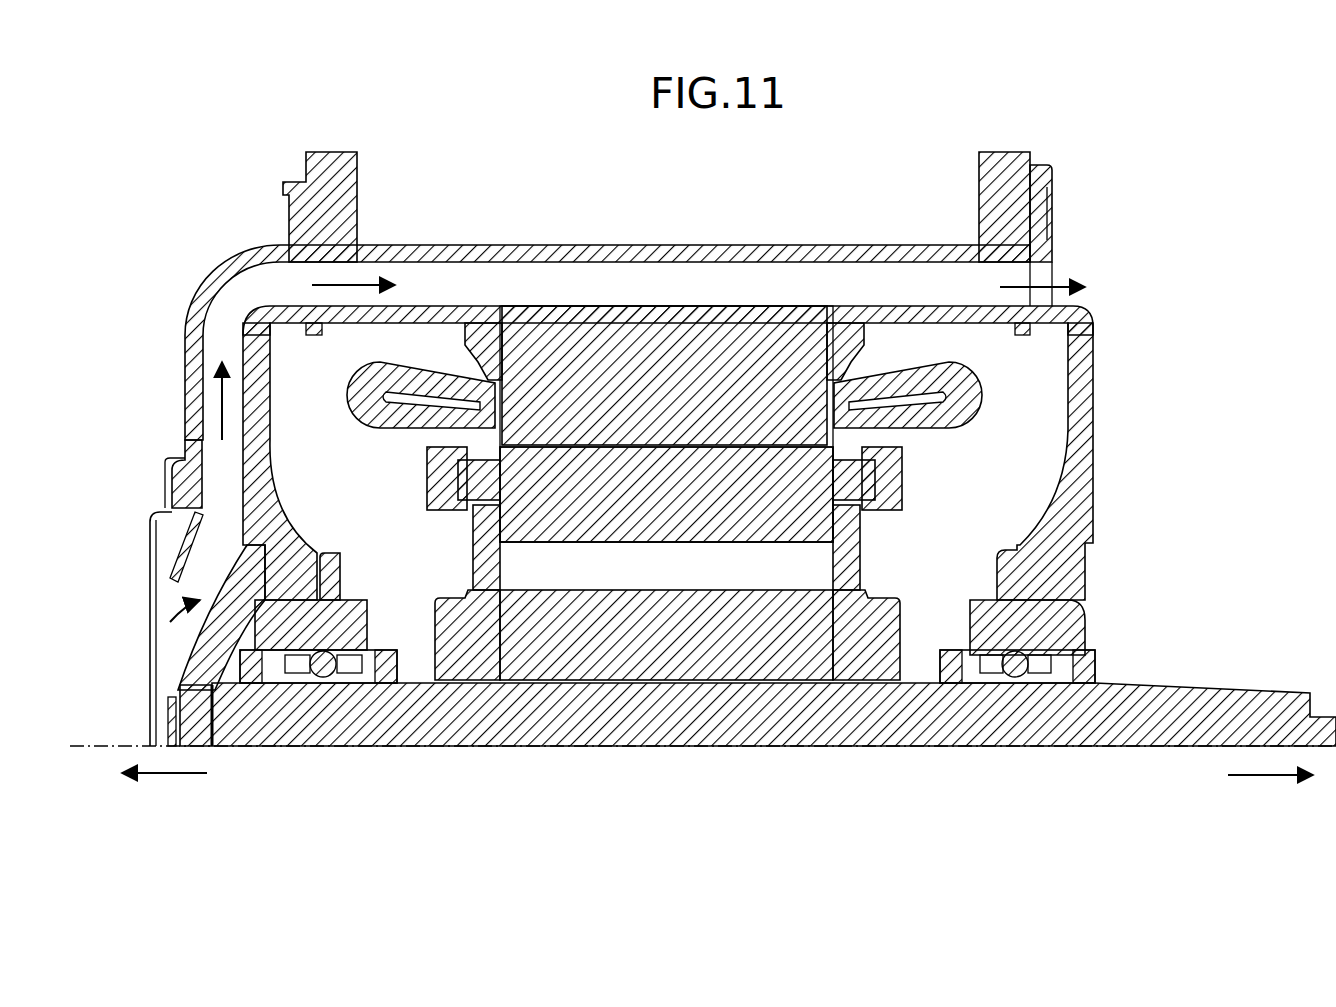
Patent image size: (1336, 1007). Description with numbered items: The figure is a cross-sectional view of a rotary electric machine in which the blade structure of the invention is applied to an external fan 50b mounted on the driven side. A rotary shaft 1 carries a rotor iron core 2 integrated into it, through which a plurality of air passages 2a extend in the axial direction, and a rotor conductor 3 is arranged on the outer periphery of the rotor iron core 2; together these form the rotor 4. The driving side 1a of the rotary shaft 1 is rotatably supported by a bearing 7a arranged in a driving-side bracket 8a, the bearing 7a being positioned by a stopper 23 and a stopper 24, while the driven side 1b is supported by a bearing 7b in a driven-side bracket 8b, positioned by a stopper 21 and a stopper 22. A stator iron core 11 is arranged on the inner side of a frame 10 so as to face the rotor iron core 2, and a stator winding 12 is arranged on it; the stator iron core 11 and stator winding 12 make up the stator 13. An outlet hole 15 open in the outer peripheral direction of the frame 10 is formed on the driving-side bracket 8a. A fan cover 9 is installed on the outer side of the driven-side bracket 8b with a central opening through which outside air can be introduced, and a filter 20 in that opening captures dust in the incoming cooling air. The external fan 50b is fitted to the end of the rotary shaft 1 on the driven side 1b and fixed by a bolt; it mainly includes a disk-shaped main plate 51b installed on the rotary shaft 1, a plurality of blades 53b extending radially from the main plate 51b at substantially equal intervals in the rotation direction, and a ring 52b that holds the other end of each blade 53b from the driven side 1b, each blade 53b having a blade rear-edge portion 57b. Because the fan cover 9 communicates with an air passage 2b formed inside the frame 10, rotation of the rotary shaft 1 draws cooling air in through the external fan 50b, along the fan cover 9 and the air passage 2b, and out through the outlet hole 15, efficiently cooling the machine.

The rotary shaft 1 is at (497, 685).
The driving side 1a is at (1270, 791).
The driven side 1b is at (164, 789).
The rotor iron core 2 is at (765, 460).
The air passage 2a is at (643, 555).
The air passage 2b is at (738, 278).
The rotor conductor 3 is at (855, 460).
The rotor 4 is at (923, 478).
The bearing 7a is at (1030, 650).
The bearing 7b is at (240, 630).
The driving-side bracket 8a is at (1085, 400).
The driven-side bracket 8b is at (253, 468).
The fan cover 9 is at (188, 347).
The frame 10 is at (425, 306).
The stator iron core 11 is at (563, 330).
The stator winding 12 is at (463, 380).
The stator 13 is at (997, 372).
The outlet hole 15 is at (1050, 272).
The filter 20 is at (152, 700).
The stopper 21 is at (285, 683).
The stopper 22 is at (368, 683).
The stopper 23 is at (963, 683).
The stopper 24 is at (1088, 683).
The external fan 50b is at (172, 733).
The main plate 51b is at (265, 578).
The ring 52b is at (195, 516).
The blade 53b is at (190, 606).
The blade rear-edge portion 57b is at (170, 475).